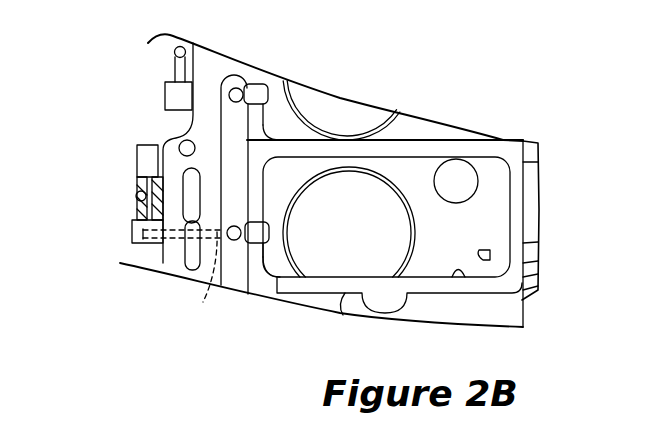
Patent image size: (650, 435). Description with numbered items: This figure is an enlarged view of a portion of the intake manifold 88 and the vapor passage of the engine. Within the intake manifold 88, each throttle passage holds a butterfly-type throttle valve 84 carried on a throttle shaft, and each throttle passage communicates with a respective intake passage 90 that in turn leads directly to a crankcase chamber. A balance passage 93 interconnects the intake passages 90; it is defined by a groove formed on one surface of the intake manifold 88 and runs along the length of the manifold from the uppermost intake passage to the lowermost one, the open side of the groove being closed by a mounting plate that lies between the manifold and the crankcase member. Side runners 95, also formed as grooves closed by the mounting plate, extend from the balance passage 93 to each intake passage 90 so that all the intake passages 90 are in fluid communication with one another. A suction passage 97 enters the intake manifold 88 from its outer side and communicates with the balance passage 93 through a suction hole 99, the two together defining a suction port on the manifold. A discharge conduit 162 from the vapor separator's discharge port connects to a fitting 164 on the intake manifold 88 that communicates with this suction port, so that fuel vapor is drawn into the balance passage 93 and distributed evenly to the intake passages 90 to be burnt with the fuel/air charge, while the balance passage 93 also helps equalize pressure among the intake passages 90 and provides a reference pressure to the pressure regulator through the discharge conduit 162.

The intake manifold 88 is at (208, 85).
The balance passage 93 is at (232, 278).
The side runner 95 is at (258, 90).
The suction hole 99 is at (252, 226).
The throttle valve 84 is at (332, 259).
The intake passage 90 is at (459, 270).
The suction passage 97 is at (182, 281).
The discharge conduit 162 is at (148, 162).
The fitting 164 is at (135, 243).